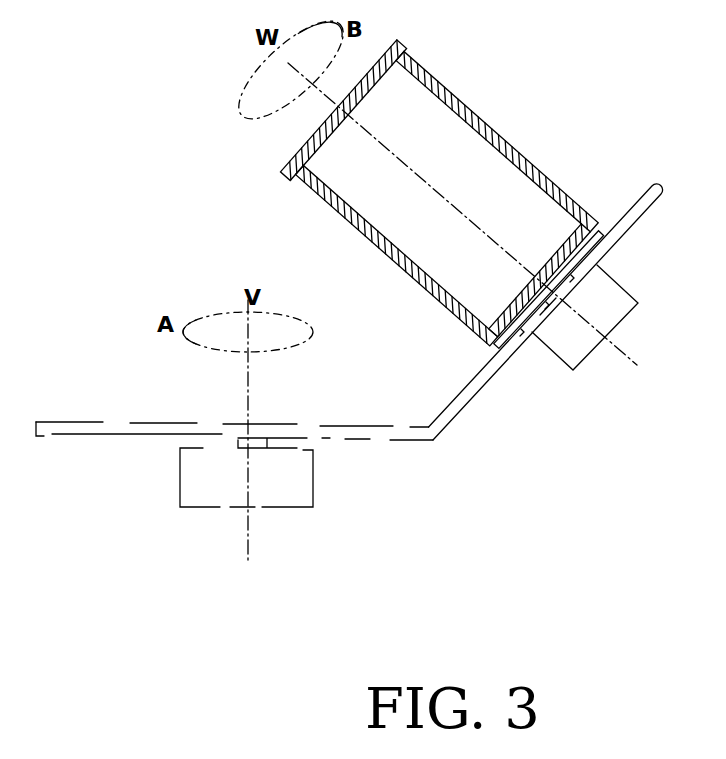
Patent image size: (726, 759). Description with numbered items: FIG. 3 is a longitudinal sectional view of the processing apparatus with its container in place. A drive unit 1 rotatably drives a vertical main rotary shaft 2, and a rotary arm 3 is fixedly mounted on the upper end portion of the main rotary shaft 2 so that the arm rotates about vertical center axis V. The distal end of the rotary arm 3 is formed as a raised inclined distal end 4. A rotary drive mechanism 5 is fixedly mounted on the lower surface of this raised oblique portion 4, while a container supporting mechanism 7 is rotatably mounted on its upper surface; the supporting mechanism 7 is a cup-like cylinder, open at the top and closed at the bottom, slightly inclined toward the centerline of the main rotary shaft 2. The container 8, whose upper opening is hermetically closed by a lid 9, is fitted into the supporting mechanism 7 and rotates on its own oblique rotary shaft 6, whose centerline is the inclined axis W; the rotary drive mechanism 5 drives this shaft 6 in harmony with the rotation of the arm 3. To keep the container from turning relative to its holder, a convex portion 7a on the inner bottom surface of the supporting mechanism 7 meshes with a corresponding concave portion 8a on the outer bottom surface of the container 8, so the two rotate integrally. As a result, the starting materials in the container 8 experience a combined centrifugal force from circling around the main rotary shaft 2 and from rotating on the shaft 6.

The drive unit 1 is at (292, 498).
The main rotary shaft 2 is at (230, 440).
The rotary arm 3 is at (363, 435).
The raised inclined distal end 4 is at (452, 416).
The rotary drive mechanism 5 is at (620, 278).
The rotary shaft 6 is at (533, 318).
The container supporting mechanism 7 is at (593, 217).
The convex portion 7a is at (505, 328).
The container 8 is at (414, 58).
The concave portion 8a is at (567, 230).
The lid 9 is at (295, 153).